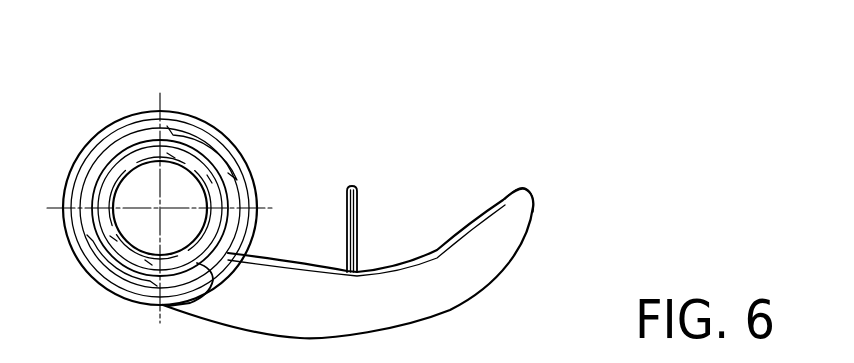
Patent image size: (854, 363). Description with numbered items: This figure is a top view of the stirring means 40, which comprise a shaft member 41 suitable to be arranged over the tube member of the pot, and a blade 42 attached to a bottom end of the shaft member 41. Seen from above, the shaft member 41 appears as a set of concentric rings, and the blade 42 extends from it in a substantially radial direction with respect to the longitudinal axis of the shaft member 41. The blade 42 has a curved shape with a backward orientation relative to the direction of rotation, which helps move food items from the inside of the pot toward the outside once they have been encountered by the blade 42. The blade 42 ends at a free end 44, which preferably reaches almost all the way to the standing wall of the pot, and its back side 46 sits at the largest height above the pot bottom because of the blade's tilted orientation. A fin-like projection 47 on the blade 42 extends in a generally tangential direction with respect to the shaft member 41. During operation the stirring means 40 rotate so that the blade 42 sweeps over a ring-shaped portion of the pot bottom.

The stirring means 40 is at (197, 118).
The shaft member 41 is at (138, 112).
The blade 42 is at (456, 265).
The free end 44 is at (522, 190).
The back side 46 is at (298, 262).
The fin-like projection 47 is at (358, 186).